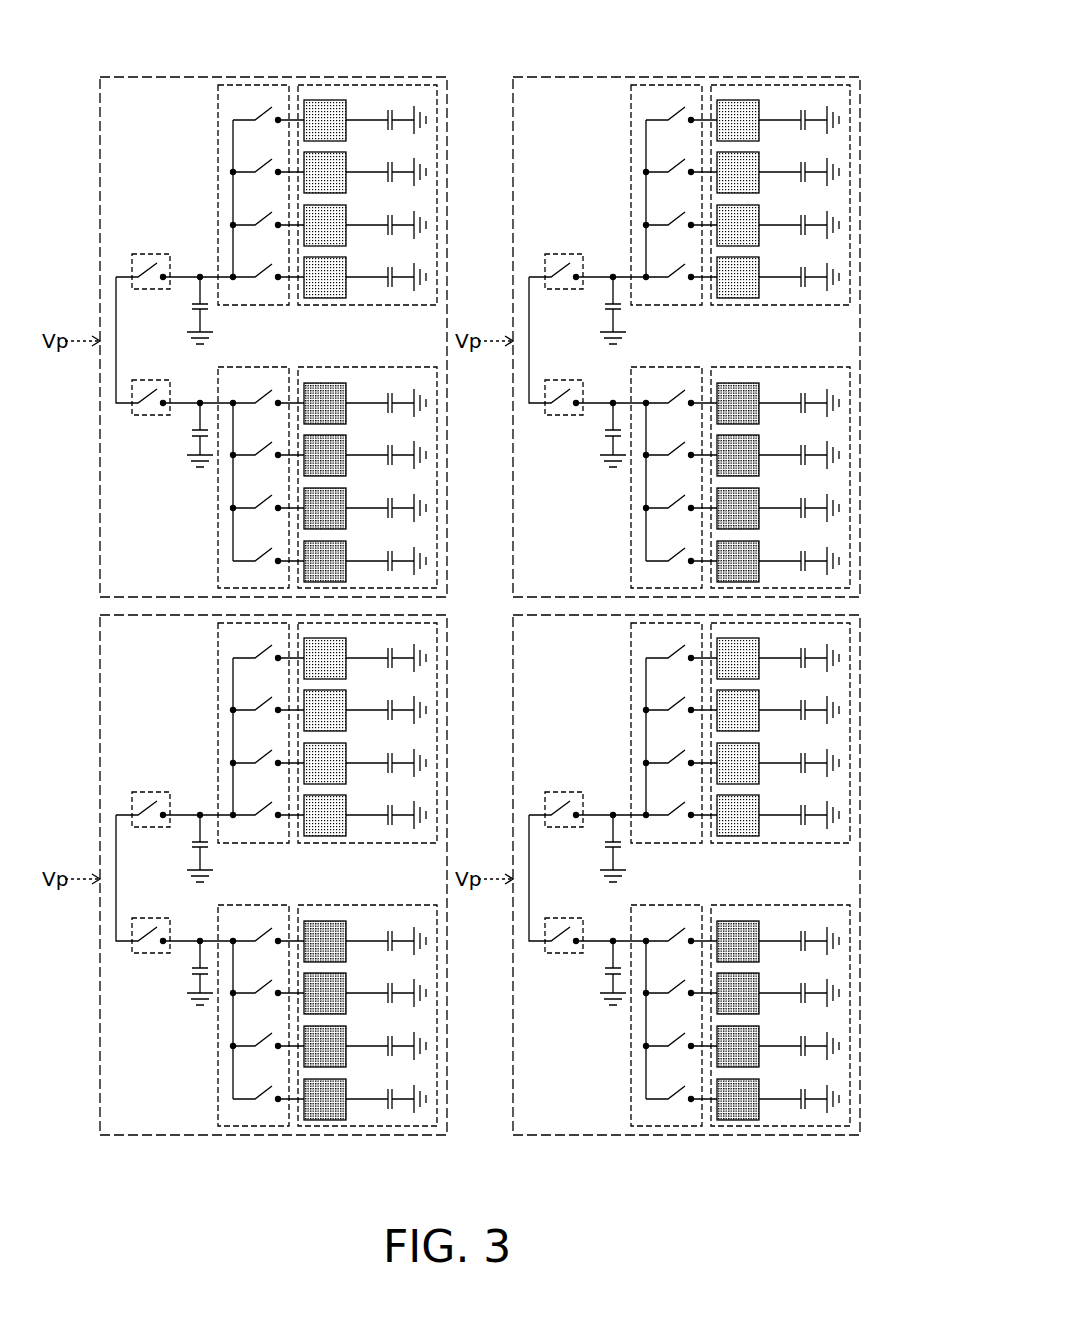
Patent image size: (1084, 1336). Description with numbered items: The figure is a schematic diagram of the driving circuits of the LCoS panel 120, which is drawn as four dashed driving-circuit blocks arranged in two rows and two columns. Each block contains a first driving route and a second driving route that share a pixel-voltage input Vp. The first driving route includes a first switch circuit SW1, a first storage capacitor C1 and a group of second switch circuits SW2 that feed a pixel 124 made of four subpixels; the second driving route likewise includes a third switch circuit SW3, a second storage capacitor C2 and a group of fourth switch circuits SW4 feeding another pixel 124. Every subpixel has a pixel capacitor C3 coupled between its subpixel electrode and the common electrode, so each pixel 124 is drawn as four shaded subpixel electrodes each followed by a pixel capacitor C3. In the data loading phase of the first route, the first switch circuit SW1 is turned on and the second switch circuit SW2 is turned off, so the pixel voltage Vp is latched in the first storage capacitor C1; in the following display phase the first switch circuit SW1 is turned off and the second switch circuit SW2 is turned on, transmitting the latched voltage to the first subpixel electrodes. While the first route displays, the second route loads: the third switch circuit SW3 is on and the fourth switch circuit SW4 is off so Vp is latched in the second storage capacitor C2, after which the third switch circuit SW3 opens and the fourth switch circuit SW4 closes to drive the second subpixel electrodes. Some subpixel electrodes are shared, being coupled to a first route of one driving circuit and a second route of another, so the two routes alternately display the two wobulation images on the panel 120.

The LCoS panel 120 is at (862, 1236).
The pixel 124 is at (439, 635).
The first switch circuit SW1 is at (353, 509).
The second switch circuit SW2 is at (422, 429).
The third switch circuit SW3 is at (353, 639).
The fourth switch circuit SW4 is at (467, 722).
The first storage capacitor C1 is at (394, 579).
The second storage capacitor C2 is at (394, 703).
The pixel capacitor C3 is at (592, 604).